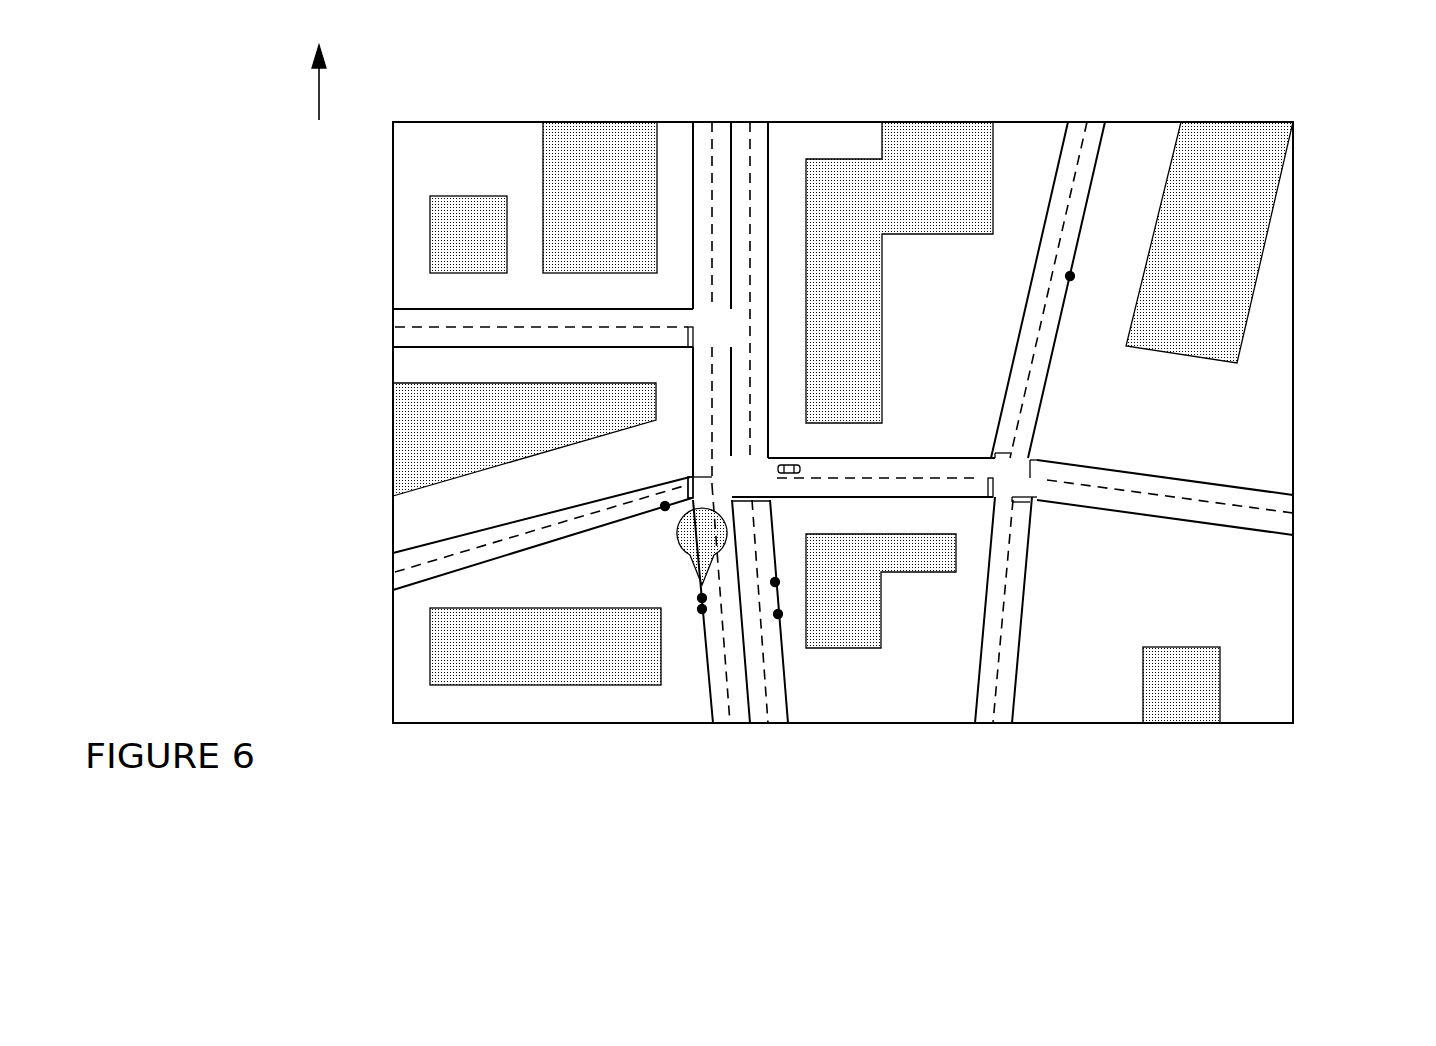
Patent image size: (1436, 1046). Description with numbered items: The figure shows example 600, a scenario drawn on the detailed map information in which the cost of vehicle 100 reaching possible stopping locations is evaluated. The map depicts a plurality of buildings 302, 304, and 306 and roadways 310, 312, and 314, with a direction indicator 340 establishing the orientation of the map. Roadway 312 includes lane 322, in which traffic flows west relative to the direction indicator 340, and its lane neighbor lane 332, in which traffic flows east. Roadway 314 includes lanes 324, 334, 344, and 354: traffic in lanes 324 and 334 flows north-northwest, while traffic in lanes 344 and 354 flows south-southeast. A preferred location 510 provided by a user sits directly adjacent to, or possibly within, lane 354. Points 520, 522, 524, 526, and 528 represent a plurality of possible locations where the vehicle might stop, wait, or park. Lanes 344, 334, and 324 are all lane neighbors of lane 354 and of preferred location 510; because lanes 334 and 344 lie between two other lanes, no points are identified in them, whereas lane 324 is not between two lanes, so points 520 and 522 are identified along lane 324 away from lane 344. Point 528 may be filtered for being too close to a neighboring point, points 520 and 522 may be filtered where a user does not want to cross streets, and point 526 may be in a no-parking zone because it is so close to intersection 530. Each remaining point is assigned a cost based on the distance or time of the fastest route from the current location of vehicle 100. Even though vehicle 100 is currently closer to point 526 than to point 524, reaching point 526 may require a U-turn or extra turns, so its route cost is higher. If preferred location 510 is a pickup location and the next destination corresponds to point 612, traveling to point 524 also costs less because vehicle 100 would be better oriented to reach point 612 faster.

The vehicle 100 is at (800, 468).
The building 302 is at (427, 240).
The building 304 is at (427, 652).
The building 306 is at (1263, 248).
The roadway 310 is at (1032, 377).
The roadway 312 is at (423, 327).
The roadway 314 is at (747, 635).
The lane 322 is at (423, 317).
The lane 324 is at (762, 518).
The lane 332 is at (423, 336).
The lane 334 is at (752, 672).
The direction indicator 340 is at (319, 108).
The lane 344 is at (738, 708).
The lane 354 is at (708, 592).
The preferred location 510 is at (677, 550).
The point 520 is at (775, 582).
The point 522 is at (778, 614).
The point 524 is at (702, 609).
The point 526 is at (665, 506).
The point 528 is at (702, 598).
The intersection 530 is at (720, 481).
The example 600 is at (720, 422).
The point 612 is at (1070, 276).